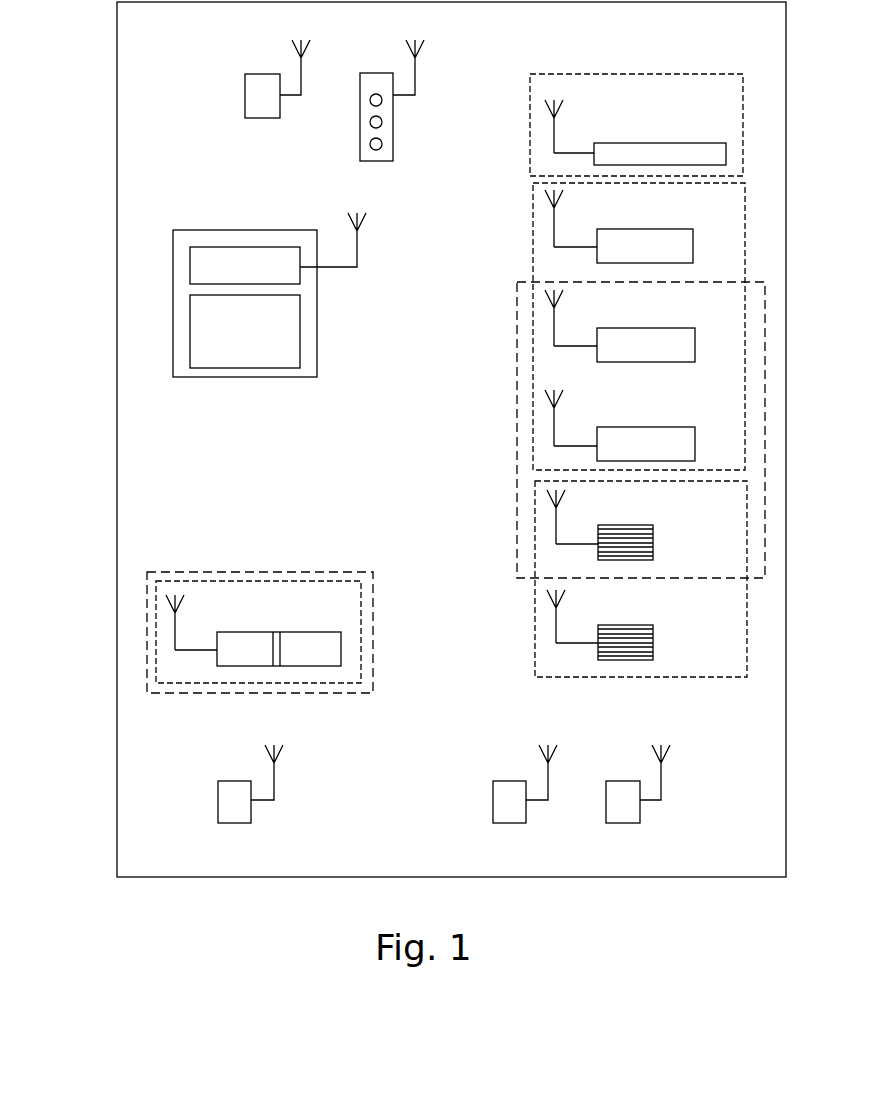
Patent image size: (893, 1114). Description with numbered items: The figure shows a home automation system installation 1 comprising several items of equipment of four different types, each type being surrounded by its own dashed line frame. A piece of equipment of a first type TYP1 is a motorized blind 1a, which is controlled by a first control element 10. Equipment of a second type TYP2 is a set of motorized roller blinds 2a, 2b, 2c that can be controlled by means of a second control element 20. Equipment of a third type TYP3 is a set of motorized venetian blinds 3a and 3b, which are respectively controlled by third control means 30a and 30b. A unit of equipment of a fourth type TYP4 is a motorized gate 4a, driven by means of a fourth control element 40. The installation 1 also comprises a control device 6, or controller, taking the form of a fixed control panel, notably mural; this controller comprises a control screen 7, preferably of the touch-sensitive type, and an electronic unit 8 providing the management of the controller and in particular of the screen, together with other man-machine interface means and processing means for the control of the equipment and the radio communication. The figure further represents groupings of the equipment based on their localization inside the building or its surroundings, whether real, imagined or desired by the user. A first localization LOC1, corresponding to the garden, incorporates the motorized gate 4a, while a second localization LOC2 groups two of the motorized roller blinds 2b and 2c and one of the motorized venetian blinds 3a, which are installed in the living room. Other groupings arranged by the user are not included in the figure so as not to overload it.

The home automation system installation 1 is at (118, 560).
The first control element 10 is at (264, 88).
The second control element 20 is at (377, 88).
The control device 6 is at (212, 235).
The control screen 7 is at (290, 340).
The electronic unit 8 is at (290, 277).
The motorized blind 1a is at (608, 145).
The motorized roller blind 2a is at (608, 237).
The motorized roller blind 2b is at (608, 336).
The motorized roller blind 2c is at (608, 435).
The motorized venetian blind 3a is at (608, 534).
The motorized venetian blind 3b is at (608, 633).
The motorized gate 4a is at (232, 642).
The third control means 30a is at (514, 792).
The third control means 30b is at (628, 792).
The fourth control element 40 is at (238, 792).
The first type TYP1 is at (530, 120).
The second type TYP2 is at (533, 217).
The third type TYP3 is at (535, 654).
The fourth type TYP4 is at (361, 614).
The first localization LOC1 is at (373, 670).
The second localization LOC2 is at (517, 381).